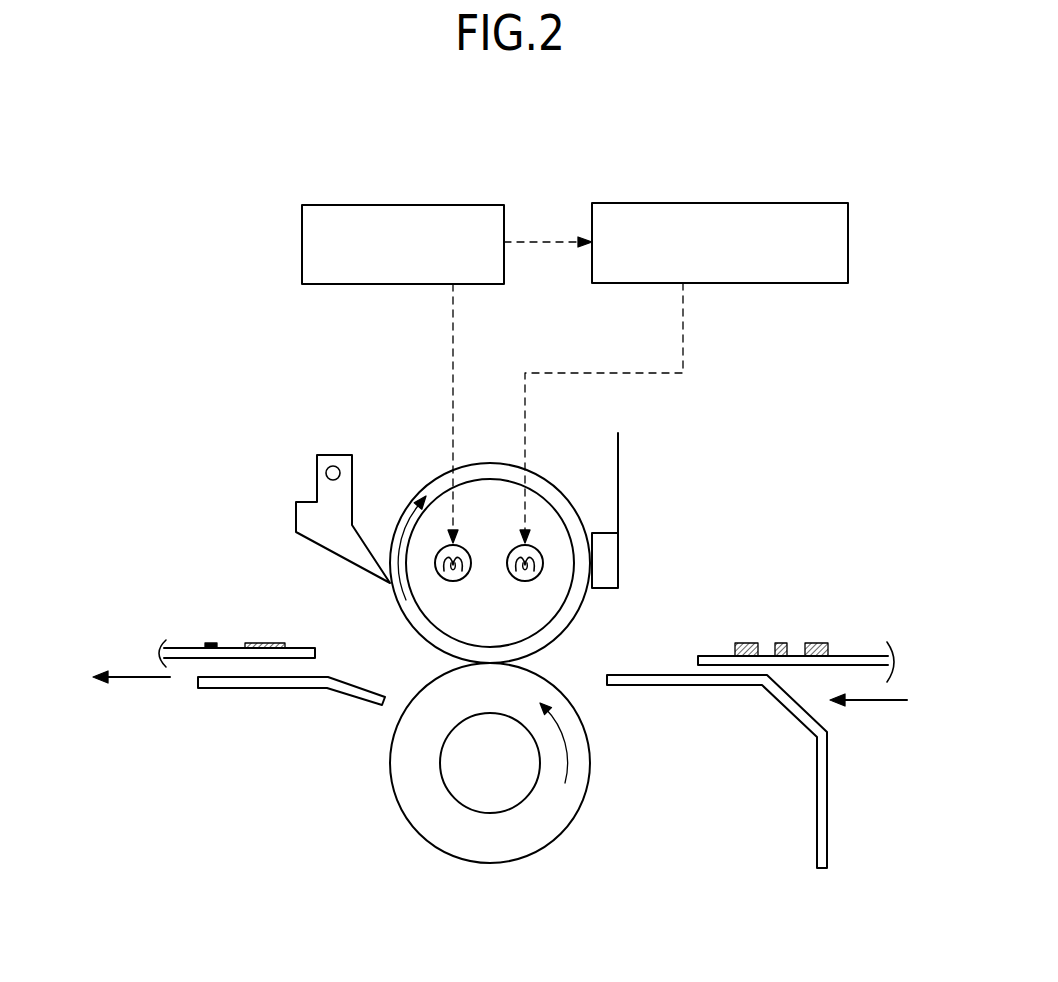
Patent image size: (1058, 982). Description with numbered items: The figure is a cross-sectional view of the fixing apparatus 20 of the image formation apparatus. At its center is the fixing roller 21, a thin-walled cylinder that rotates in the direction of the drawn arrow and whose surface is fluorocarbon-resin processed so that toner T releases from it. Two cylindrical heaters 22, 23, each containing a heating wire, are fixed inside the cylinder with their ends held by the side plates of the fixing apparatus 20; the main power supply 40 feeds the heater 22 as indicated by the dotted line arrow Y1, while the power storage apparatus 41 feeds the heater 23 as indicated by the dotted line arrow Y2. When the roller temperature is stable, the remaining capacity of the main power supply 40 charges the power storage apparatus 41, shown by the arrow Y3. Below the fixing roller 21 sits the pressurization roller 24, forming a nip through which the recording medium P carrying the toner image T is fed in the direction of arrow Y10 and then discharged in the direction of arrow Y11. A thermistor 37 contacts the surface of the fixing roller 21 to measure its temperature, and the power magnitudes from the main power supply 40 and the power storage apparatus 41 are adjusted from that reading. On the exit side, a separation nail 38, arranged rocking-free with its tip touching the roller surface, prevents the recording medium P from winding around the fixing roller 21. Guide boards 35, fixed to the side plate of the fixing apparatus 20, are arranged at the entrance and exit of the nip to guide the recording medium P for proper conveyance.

The fixing apparatus 20 is at (786, 514).
The fixing roller 21 is at (432, 478).
The heater 22 is at (440, 577).
The heater 23 is at (542, 573).
The pressurization roller 24 is at (558, 813).
The guide board 35 is at (273, 688).
The thermistor 37 is at (607, 558).
The separation nail 38 is at (320, 485).
The main power supply 40 is at (413, 205).
The power storage apparatus 41 is at (685, 203).
The dotted line arrow Y1 is at (453, 316).
The dotted line arrow Y2 is at (683, 326).
The arrow Y3 is at (523, 242).
The arrow Y10 is at (877, 700).
The arrow Y11 is at (142, 677).
The recording medium P is at (182, 652).
The toner T is at (240, 647).